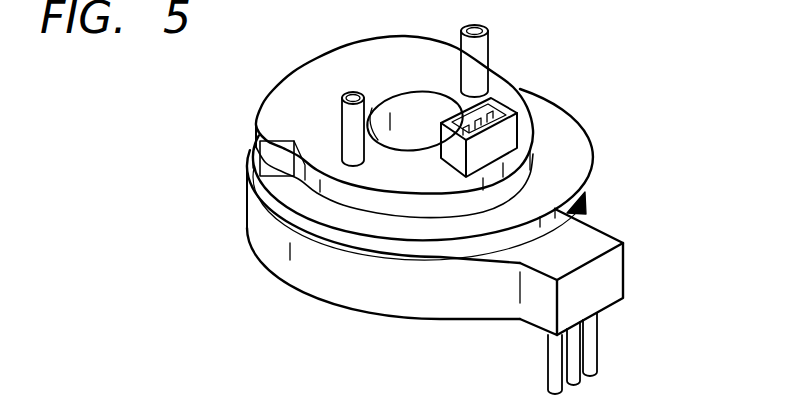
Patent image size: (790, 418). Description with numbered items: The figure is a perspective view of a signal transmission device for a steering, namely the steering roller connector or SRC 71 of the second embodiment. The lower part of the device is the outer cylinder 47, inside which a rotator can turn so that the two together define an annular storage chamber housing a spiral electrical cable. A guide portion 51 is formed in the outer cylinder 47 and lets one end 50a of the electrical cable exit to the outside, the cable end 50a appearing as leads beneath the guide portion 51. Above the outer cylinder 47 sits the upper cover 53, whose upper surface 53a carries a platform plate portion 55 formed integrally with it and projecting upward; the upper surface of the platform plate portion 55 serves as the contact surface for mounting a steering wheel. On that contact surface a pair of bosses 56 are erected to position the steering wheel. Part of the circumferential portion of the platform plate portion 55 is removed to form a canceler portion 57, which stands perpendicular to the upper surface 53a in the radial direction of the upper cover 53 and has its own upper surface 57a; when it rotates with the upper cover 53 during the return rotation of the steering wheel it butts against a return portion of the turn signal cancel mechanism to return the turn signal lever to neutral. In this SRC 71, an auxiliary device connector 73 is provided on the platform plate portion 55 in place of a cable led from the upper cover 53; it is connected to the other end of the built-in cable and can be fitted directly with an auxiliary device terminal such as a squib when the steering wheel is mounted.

The SRC 71 is at (580, 66).
The upper surface of the canceler portion 57a is at (297, 88).
The platform plate portion 55 is at (326, 203).
The canceler portion 57 is at (283, 160).
The bosses 56 is at (360, 97).
The auxiliary device connector 73 is at (503, 143).
The upper cover 53 is at (367, 262).
The upper surface 53a is at (550, 180).
The outer cylinder 47 is at (417, 307).
The guide portion 51 is at (612, 275).
The one end of the electrical cable 50a is at (596, 362).